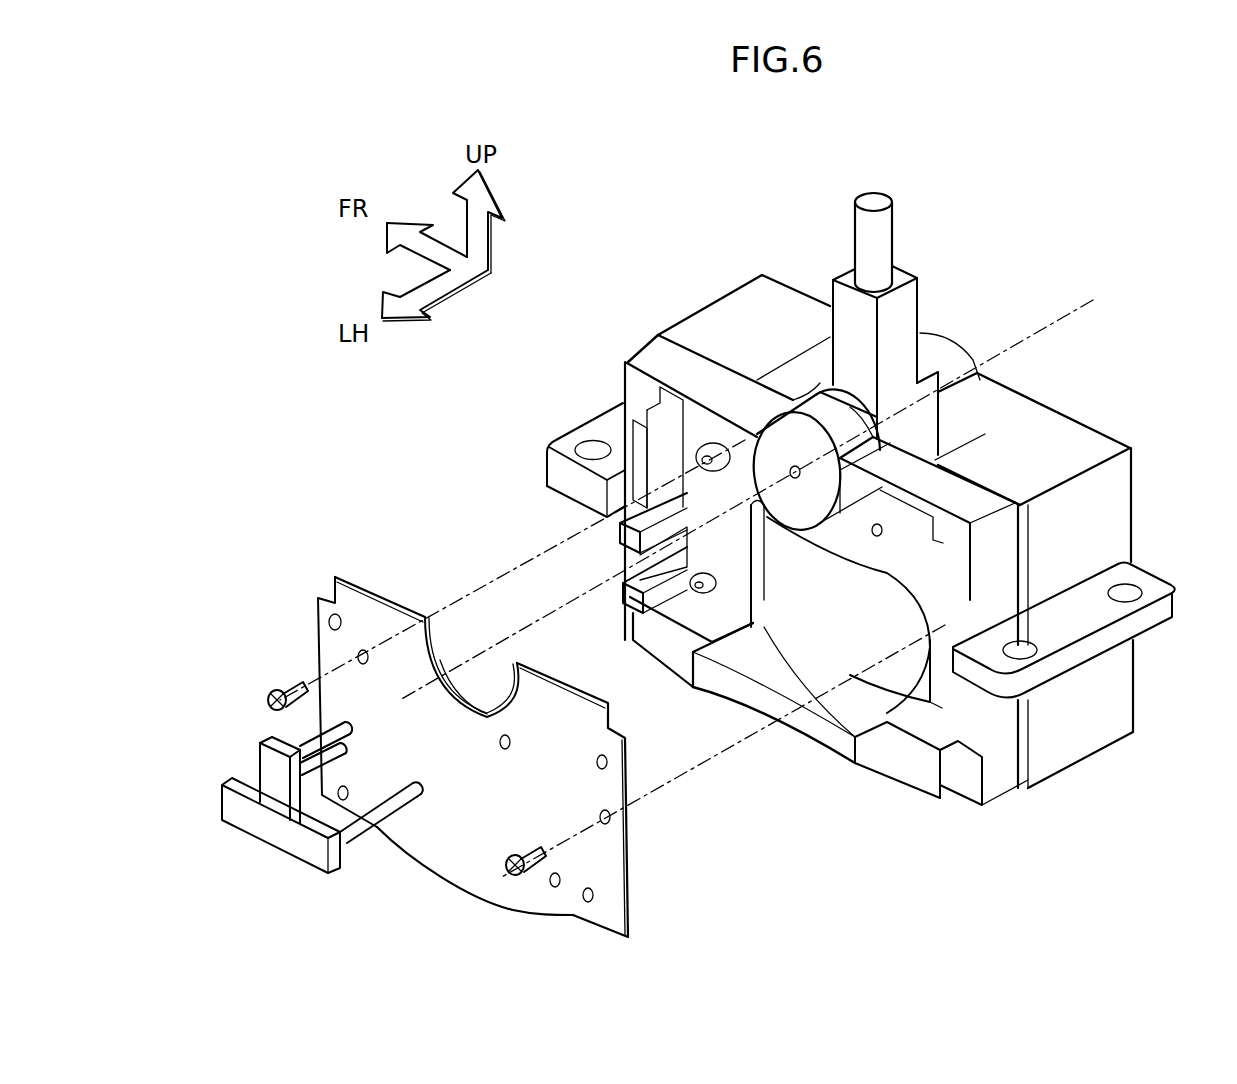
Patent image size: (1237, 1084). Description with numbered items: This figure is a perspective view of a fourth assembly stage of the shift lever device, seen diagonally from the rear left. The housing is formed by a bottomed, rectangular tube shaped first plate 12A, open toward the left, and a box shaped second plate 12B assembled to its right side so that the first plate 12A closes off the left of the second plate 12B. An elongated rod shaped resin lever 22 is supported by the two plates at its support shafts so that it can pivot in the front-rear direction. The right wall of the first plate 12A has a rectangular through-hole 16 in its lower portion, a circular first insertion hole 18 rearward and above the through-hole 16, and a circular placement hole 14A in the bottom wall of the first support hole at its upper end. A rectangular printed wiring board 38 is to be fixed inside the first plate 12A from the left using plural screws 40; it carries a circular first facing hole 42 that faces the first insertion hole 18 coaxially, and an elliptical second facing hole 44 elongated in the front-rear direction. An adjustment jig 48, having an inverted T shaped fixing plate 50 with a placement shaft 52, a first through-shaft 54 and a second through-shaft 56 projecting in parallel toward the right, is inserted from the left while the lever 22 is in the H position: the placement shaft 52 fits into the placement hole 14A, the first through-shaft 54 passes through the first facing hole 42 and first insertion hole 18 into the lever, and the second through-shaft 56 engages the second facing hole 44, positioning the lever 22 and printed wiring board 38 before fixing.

The first plate 12A is at (625, 362).
The second plate 12B is at (1077, 420).
The placement hole 14A is at (795, 478).
The through-hole 16 is at (767, 600).
The first insertion hole 18 is at (875, 537).
The lever 22 is at (895, 222).
The printed wiring board 38 is at (370, 587).
The screws 40 is at (297, 685).
The first facing hole 42 is at (505, 742).
The second facing hole 44 is at (435, 692).
The adjustment jig 48 is at (257, 841).
The fixing plate 50 is at (300, 863).
The placement shaft 52 is at (352, 740).
The first through-shaft 54 is at (400, 820).
The second through-shaft 56 is at (337, 777).